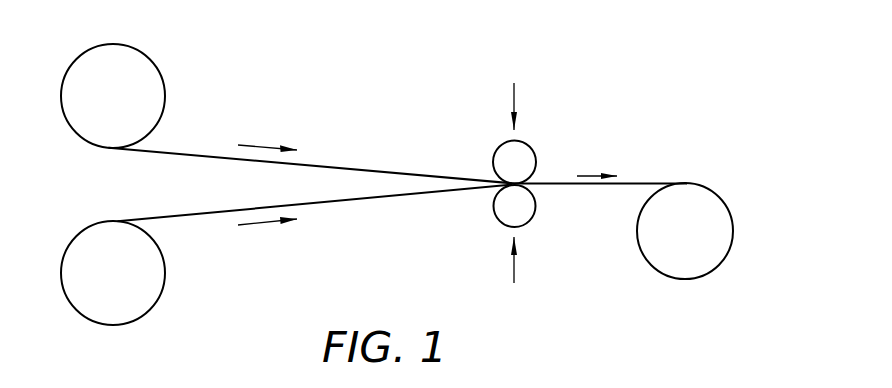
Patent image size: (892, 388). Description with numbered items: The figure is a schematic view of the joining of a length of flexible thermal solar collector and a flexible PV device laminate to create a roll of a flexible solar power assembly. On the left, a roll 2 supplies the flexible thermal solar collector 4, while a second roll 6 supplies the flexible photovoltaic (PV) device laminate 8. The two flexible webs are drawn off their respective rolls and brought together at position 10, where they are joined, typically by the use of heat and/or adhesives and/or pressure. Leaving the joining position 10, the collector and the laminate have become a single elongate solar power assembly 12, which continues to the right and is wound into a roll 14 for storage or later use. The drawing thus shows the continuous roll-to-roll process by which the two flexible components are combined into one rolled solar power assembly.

The roll 2 is at (131, 284).
The flexible thermal solar collector 4 is at (315, 218).
The roll 6 is at (126, 75).
The flexible photovoltaic (PV) device laminate 8 is at (311, 157).
The position 10 is at (551, 183).
The elongate solar power assembly 12 is at (599, 202).
The roll 14 is at (719, 216).